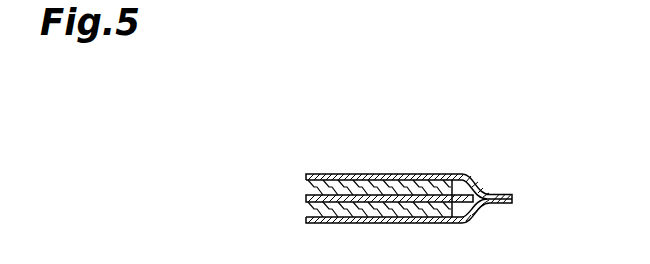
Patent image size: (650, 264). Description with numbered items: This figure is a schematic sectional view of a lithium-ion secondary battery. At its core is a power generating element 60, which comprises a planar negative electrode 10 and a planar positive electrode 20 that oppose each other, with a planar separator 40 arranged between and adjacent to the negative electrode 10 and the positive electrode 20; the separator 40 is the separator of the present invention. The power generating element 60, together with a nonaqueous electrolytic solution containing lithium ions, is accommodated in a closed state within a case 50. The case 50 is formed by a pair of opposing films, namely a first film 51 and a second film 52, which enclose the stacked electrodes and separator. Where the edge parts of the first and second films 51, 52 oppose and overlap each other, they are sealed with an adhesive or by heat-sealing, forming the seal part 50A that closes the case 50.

The negative electrode 10 is at (306, 183).
The positive electrode 20 is at (306, 213).
The separator 40 is at (306, 198).
The case 50 is at (450, 122).
The seal part 50A is at (494, 193).
The first film 51 is at (382, 177).
The second film 52 is at (408, 220).
The power generating element 60 is at (244, 150).